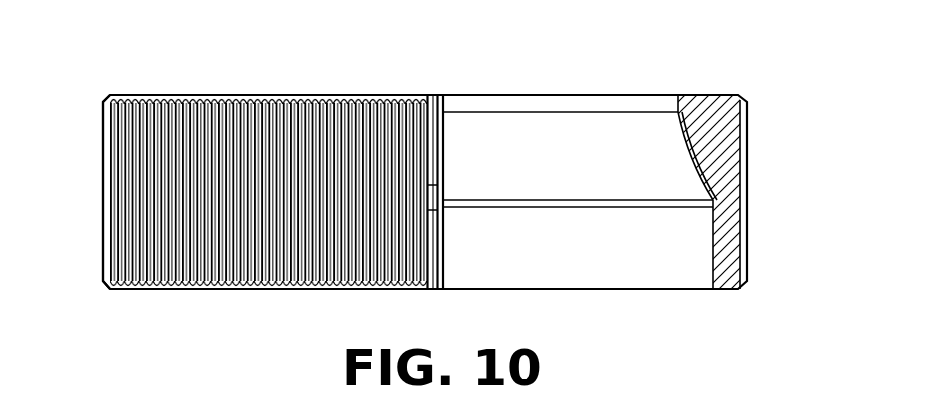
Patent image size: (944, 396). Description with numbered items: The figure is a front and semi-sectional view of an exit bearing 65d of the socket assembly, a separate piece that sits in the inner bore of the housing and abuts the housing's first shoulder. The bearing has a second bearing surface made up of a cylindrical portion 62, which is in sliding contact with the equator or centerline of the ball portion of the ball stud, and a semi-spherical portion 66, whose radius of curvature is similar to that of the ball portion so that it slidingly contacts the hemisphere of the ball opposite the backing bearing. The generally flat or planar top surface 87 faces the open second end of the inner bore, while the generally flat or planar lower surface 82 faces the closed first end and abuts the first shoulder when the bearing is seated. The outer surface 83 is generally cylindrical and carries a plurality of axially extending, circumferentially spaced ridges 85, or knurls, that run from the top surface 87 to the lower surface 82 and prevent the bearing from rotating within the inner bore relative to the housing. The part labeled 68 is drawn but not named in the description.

The exit bearing 65d is at (802, 112).
The cylindrical portion 62 is at (612, 257).
The semi-spherical portion 66 is at (500, 137).
The seal member 68 is at (700, 121).
The lower surface 82 is at (265, 290).
The outer surface 83 is at (103, 200).
The ridges 85 is at (165, 145).
The top surface 87 is at (285, 95).